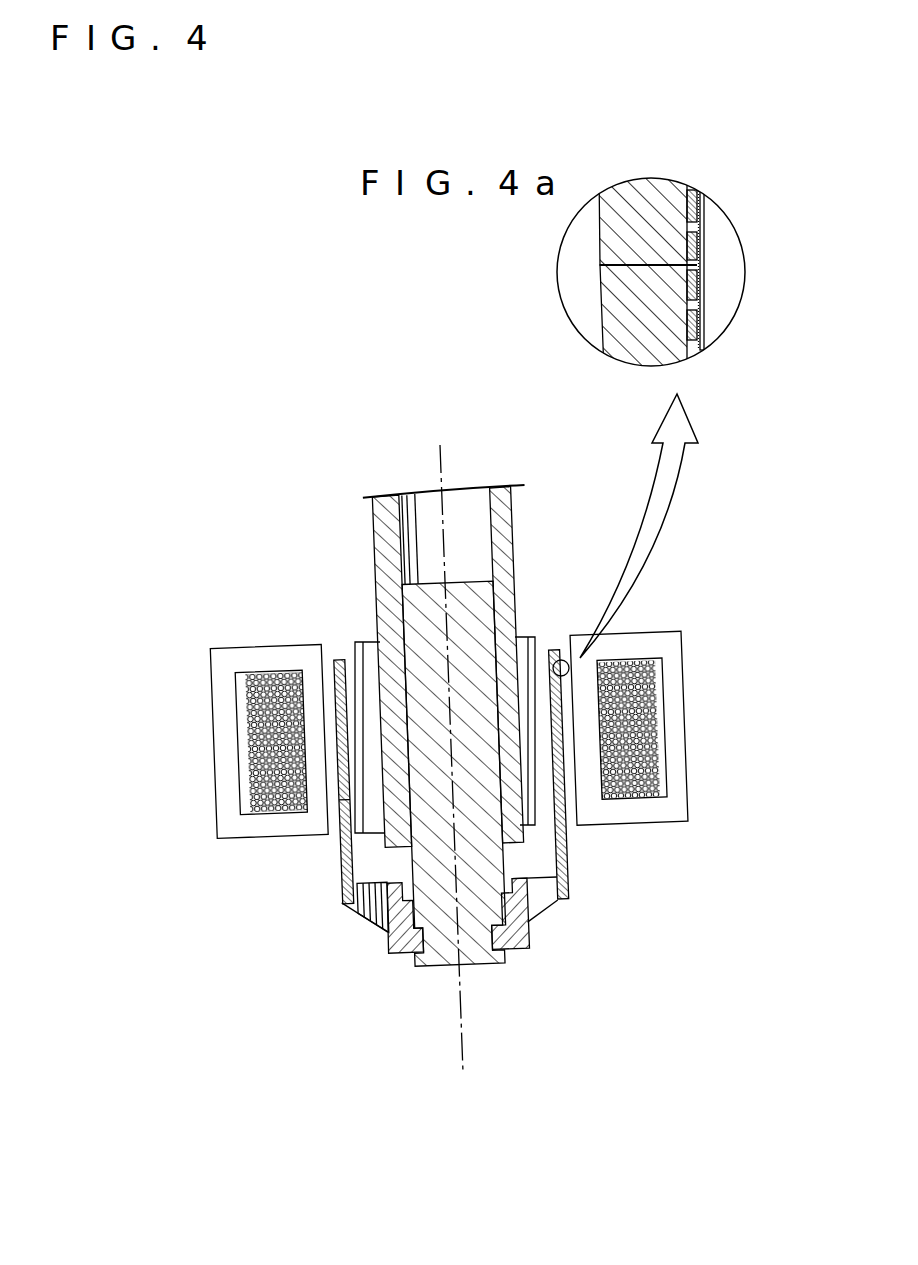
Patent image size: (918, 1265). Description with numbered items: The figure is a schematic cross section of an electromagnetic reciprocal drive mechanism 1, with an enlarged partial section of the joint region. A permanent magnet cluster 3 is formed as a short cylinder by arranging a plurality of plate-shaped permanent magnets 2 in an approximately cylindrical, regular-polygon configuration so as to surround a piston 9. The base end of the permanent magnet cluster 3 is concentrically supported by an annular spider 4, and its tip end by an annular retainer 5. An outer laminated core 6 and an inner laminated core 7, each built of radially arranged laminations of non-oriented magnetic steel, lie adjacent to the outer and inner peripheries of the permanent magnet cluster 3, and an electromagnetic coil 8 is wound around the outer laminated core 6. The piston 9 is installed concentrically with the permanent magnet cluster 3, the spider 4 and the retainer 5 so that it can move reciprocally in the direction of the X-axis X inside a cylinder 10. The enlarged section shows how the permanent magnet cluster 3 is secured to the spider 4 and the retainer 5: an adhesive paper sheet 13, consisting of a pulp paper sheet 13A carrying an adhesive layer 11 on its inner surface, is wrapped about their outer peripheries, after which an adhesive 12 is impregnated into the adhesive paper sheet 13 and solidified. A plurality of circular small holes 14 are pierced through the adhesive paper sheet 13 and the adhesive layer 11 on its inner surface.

In FIG. 4, the electromagnetic reciprocal drive mechanism 1 is at (455, 734).
In FIG. 4, the permanent magnet 2 is at (558, 695).
In FIG. 4a, the permanent magnet 2 is at (633, 333).
In FIG. 4, the permanent magnet cluster 3 is at (590, 773).
In FIG. 4, the annular spider 4 is at (518, 925).
In FIG. 4, the annular retainer 5 is at (557, 652).
In FIG. 4a, the annular retainer 5 is at (622, 200).
In FIG. 4, the outer laminated core 6 is at (648, 813).
In FIG. 4, the inner laminated core 7 is at (528, 745).
In FIG. 4, the electromagnetic coil 8 is at (650, 710).
In FIG. 4, the piston 9 is at (375, 533).
In FIG. 4, the cylinder 10 is at (383, 607).
In FIG. 4a, the adhesive layer 11 is at (683, 205).
In FIG. 4a, the adhesive 12 is at (700, 225).
In FIG. 4a, the adhesive paper sheet 13 is at (756, 242).
In FIG. 4a, the paper sheet 13A is at (703, 212).
In FIG. 4a, the circular small hole 14 is at (690, 266).
In FIG. 4, the X-axis X is at (463, 1057).